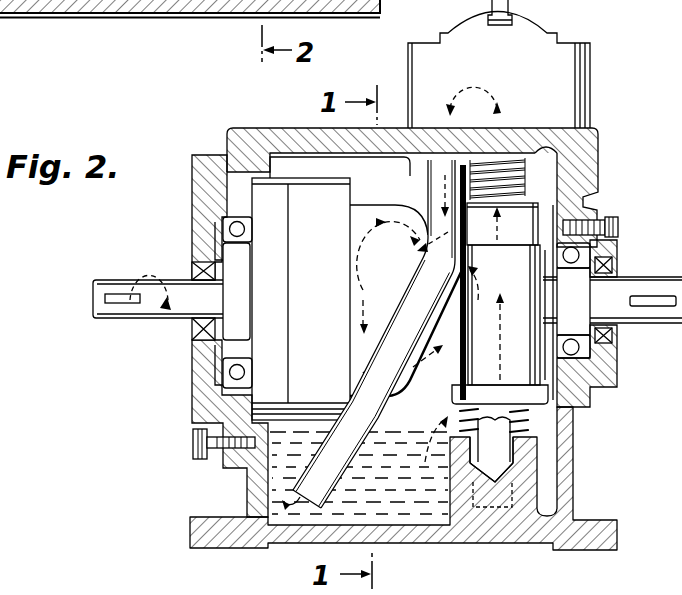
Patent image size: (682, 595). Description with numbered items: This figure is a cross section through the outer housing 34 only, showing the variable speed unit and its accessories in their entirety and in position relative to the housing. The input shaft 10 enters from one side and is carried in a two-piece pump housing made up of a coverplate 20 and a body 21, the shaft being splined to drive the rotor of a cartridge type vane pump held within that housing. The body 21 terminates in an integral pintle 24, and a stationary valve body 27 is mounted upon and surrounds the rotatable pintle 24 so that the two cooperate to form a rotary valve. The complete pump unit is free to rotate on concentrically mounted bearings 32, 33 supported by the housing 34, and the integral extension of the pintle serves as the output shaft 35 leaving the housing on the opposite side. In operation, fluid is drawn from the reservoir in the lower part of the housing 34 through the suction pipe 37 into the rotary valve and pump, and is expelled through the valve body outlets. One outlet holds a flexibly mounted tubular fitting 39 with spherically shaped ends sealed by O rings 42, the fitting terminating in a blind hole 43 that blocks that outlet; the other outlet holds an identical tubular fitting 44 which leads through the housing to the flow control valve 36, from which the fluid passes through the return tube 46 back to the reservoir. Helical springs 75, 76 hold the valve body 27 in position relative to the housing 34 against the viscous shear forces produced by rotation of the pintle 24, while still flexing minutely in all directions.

The input shaft 10 is at (180, 283).
The coverplate 20 is at (262, 327).
The body 21 is at (357, 320).
The pintle 24 is at (532, 249).
The valve body 27 is at (538, 210).
The bearing 32 is at (236, 214).
The bearing 33 is at (577, 388).
The housing 34 is at (68, 13).
The output shaft 35 is at (620, 284).
The flow control valve 36 is at (578, 64).
The suction pipe 37 is at (512, 496).
The tubular fitting 39 is at (500, 466).
The O rings 42 is at (514, 431).
The blind hole 43 is at (497, 471).
The tubular fitting 44 is at (583, 193).
The return tube 46 is at (307, 478).
The helical spring 75 is at (513, 412).
The helical spring 76 is at (553, 156).